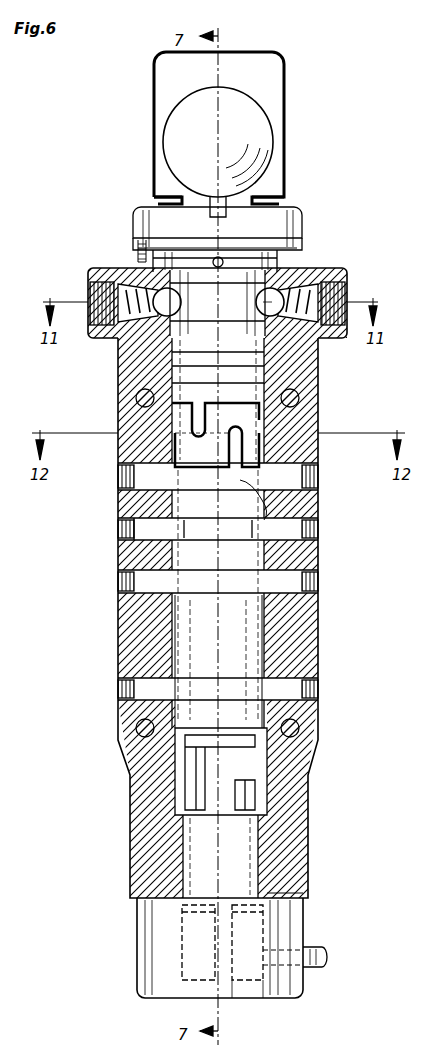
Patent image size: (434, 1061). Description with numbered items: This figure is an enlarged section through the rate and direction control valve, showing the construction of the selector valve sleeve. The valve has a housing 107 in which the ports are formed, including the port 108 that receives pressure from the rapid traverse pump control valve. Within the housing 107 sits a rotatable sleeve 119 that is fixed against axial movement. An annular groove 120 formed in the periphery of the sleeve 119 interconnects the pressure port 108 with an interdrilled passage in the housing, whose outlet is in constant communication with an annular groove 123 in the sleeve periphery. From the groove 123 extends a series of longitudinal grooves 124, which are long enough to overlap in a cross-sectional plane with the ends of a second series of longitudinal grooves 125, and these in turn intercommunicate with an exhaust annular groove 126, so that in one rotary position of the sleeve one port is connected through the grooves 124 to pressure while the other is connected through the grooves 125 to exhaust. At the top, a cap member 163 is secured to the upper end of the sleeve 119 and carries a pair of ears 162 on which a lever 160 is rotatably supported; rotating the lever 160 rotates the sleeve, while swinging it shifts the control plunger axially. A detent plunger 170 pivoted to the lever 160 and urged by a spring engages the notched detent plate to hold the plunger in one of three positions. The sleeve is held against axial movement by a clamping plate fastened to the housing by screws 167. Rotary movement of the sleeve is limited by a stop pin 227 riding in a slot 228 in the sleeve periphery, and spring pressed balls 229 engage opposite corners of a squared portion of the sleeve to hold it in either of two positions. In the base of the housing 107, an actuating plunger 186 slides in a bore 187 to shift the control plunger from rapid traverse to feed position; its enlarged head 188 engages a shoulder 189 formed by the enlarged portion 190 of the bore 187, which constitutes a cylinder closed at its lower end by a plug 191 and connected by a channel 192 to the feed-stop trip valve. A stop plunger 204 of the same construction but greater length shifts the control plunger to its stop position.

The lever 160 is at (277, 77).
The ears 162 is at (178, 203).
The cap member 163 is at (284, 216).
The screws 167 is at (138, 252).
The detent plunger 170 is at (221, 258).
The stop pin 227 is at (236, 240).
The slot 228 is at (280, 268).
The spring pressed balls 229 is at (160, 285).
The annular groove 123 is at (248, 395).
The longitudinal grooves 124 is at (190, 423).
The longitudinal grooves 125 is at (172, 455).
The annular groove 126 is at (305, 505).
The port 108 is at (148, 529).
The annular groove 120 is at (232, 530).
The housing 107 is at (308, 606).
The rotatable sleeve 119 is at (250, 645).
The stop plunger 204 is at (195, 787).
The actuating plunger 186 is at (258, 800).
The bore 187 is at (268, 857).
The shoulder 189 is at (268, 898).
The enlarged head 188 is at (265, 908).
The enlarged portion 190 is at (262, 928).
The plug 191 is at (252, 998).
The channel 192 is at (316, 968).